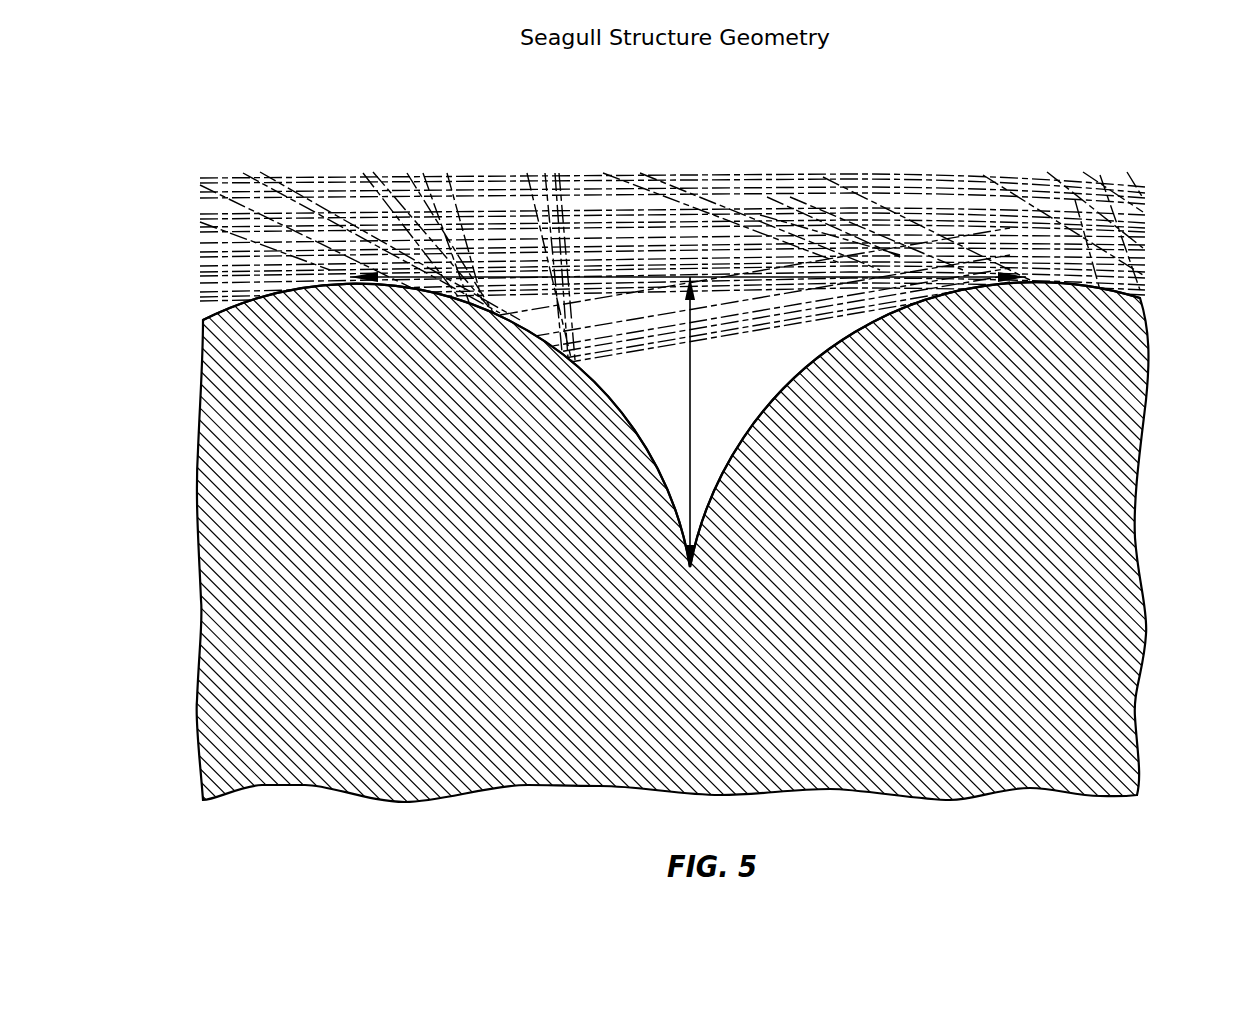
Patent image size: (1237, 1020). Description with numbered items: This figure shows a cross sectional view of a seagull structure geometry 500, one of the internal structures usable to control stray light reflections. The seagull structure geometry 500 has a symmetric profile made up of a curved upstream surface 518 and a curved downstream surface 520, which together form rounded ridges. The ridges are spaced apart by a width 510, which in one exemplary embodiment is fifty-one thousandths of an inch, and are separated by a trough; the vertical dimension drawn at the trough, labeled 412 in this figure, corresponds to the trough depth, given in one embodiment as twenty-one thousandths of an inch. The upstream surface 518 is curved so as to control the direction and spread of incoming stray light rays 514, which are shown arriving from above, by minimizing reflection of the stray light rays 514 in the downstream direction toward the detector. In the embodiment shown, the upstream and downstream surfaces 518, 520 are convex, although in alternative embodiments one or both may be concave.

The seagull structure geometry 500 is at (308, 78).
The width 510 is at (723, 277).
The stray light rays 514 is at (1160, 154).
The upstream surface 518 is at (595, 385).
The downstream surface 520 is at (833, 344).
The depth of seagull structure 412 is at (690, 409).